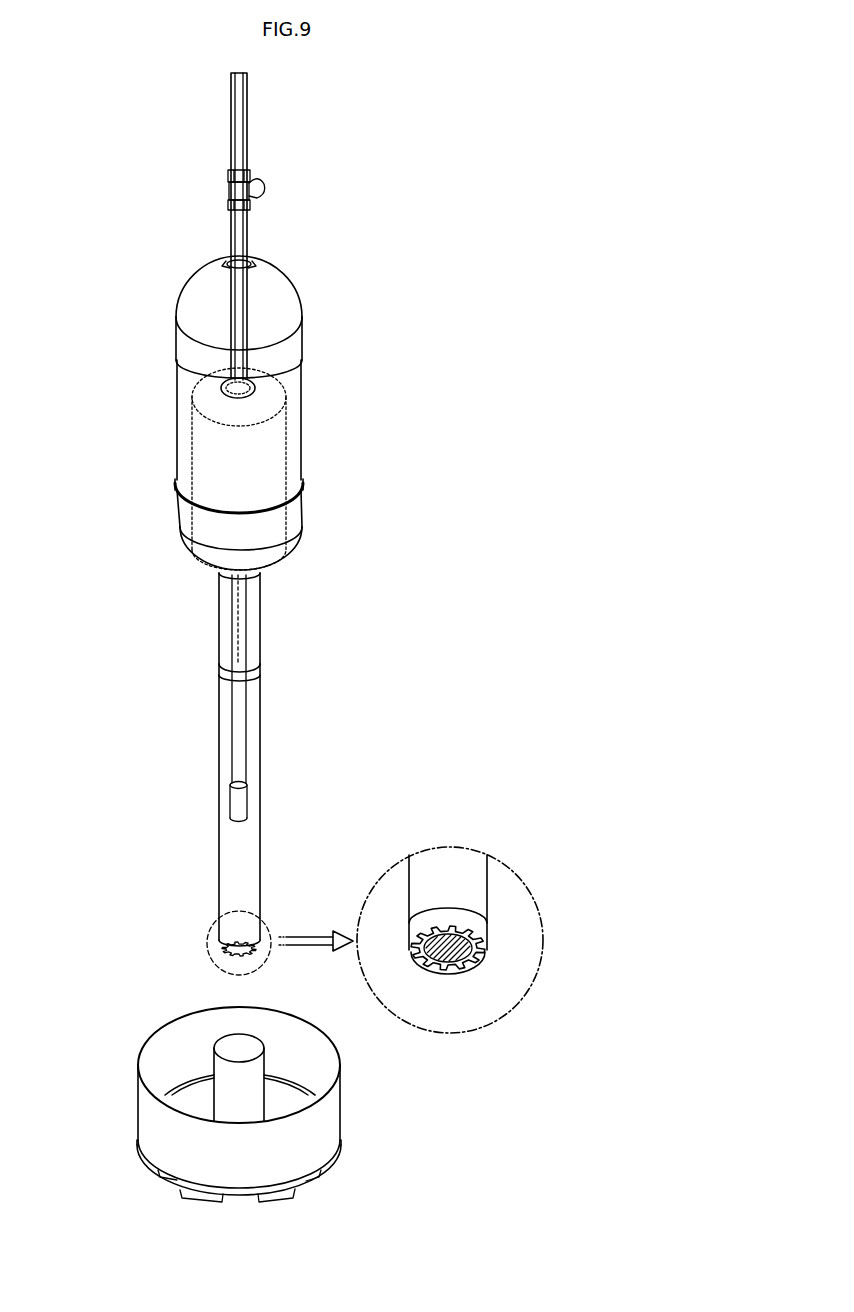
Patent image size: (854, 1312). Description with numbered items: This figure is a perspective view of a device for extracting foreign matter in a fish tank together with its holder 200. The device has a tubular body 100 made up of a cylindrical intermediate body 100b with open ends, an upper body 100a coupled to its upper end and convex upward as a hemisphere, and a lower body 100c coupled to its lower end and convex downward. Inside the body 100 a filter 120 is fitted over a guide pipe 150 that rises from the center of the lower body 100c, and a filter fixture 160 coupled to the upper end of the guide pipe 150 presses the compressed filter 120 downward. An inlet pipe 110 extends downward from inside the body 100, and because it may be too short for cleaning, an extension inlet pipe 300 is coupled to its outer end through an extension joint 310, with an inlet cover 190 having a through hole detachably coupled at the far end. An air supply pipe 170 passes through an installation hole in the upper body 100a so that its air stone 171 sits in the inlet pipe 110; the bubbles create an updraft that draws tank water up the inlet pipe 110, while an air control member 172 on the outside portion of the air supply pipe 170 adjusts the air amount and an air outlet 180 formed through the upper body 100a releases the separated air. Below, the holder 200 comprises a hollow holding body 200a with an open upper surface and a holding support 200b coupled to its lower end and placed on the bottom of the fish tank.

The body 100 is at (296, 256).
The upper body 100a is at (187, 296).
The intermediate body 100b is at (188, 396).
The lower body 100c is at (176, 500).
The inlet pipe 110 is at (255, 613).
The filter 120 is at (287, 444).
The guide pipe 150 is at (255, 1035).
The filter fixture 160 is at (283, 384).
The air supply pipe 170 is at (240, 716).
The air stone 171 is at (243, 802).
The air control member 172 is at (231, 186).
The air outlet 180 is at (227, 258).
The inlet cover 190 is at (217, 946).
The holder 200 is at (129, 1026).
The holding body 200a is at (146, 1108).
The holding support 200b is at (142, 1153).
The extension inlet pipe 300 is at (253, 852).
The extension joint 310 is at (216, 676).